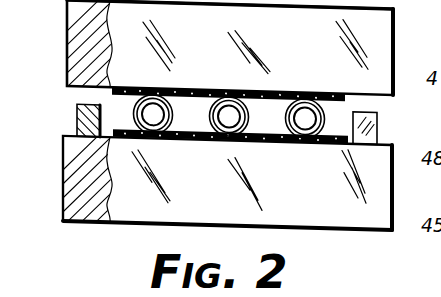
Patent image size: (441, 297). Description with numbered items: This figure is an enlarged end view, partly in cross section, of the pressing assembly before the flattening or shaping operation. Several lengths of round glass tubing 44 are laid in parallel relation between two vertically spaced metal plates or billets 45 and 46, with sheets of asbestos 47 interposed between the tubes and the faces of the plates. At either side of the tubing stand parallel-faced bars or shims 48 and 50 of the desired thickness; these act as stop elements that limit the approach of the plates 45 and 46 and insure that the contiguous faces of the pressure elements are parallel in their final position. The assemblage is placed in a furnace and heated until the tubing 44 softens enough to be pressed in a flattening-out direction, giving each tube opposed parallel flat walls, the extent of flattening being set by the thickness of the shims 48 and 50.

The glass tubing 44 is at (206, 118).
The metal plate 45 is at (80, 192).
The metal plate 46 is at (82, 48).
The sheet of asbestos 47 is at (122, 92).
The bar or shim 48 is at (82, 120).
The bar or shim 50 is at (378, 122).